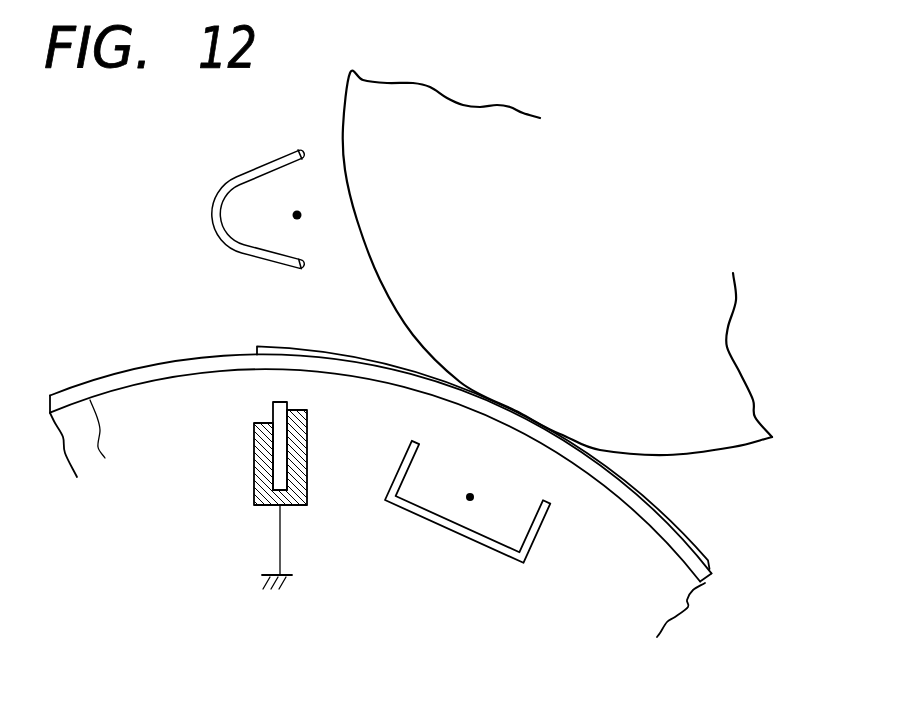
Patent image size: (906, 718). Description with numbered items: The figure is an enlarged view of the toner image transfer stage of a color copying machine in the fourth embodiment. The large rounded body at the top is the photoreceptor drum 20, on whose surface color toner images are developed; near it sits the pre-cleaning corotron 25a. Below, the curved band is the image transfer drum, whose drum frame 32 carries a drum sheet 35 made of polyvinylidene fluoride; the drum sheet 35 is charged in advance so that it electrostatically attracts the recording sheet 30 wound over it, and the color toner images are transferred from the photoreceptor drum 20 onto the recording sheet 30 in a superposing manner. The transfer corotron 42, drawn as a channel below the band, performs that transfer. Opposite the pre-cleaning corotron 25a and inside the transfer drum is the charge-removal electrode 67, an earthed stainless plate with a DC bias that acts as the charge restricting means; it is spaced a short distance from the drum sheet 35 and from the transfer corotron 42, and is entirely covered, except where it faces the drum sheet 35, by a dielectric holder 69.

The photoreceptor drum 20 is at (740, 447).
The pre-cleaning corotron 25a is at (259, 168).
The recording sheet 30 is at (683, 527).
The drum frame 32 is at (118, 371).
The drum sheet 35 is at (87, 443).
The transfer corotron 42 is at (482, 548).
The charge-removal electrode 67 is at (281, 478).
The dielectric holder 69 is at (307, 431).